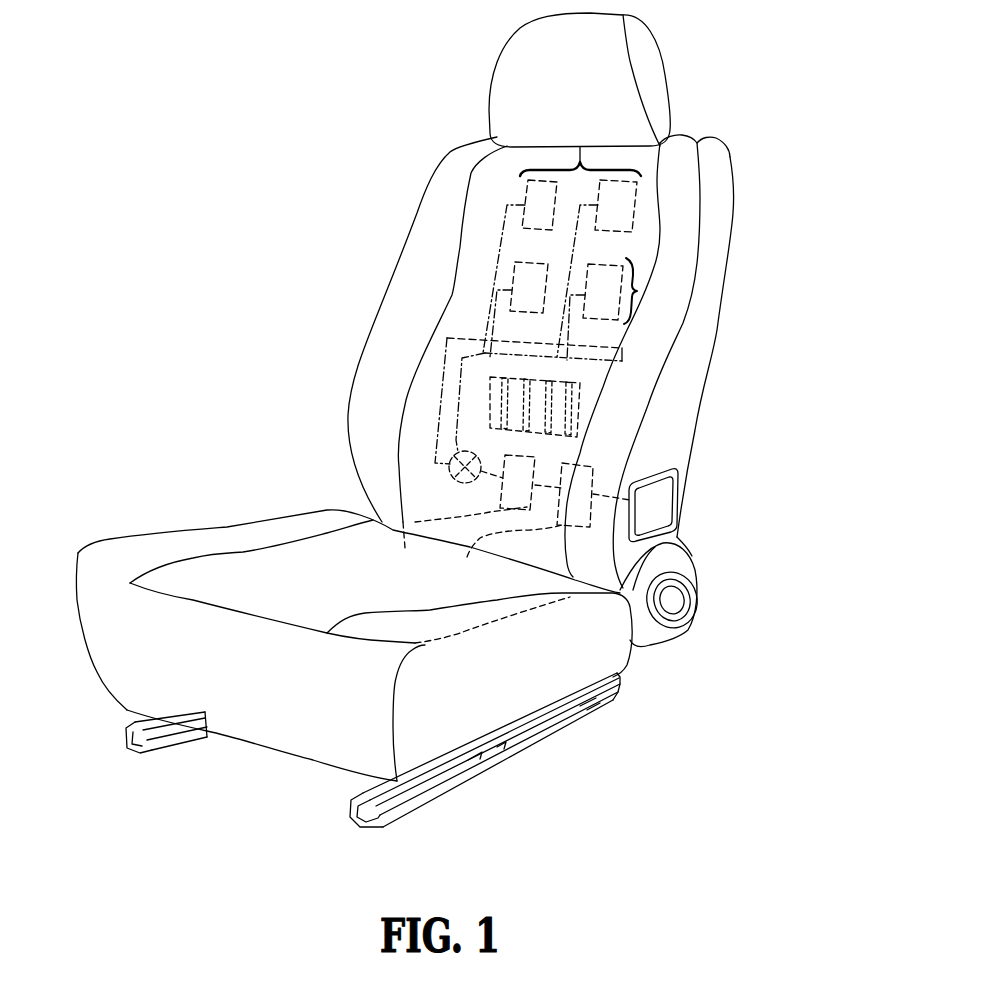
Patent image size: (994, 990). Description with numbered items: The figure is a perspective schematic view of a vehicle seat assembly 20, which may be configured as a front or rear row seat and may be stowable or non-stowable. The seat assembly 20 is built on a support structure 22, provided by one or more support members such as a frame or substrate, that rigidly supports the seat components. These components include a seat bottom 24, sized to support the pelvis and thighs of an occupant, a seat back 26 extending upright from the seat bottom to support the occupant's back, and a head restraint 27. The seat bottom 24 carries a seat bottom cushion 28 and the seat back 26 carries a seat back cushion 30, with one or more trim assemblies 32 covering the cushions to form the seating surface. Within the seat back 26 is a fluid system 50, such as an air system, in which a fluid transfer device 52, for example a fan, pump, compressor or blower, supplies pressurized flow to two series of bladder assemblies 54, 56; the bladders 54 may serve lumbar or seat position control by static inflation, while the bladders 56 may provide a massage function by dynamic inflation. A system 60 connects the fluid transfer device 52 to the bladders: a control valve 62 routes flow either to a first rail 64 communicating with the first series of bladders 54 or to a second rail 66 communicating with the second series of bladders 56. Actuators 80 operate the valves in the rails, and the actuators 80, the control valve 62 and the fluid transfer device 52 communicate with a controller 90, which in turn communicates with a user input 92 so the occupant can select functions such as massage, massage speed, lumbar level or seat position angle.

The seat assembly 20 is at (257, 417).
The support structure 22 is at (613, 700).
The seat bottom 24 is at (157, 507).
The seat back 26 is at (407, 185).
The head restraint 27 is at (657, 77).
The seat bottom cushion 28 is at (447, 622).
The seat back cushion 30 is at (648, 255).
The trim assembly 32 is at (734, 253).
The fluid system 50 is at (440, 267).
The fluid transfer device 52 is at (404, 553).
The first series of bladder assemblies 54 is at (637, 293).
The second series of bladder assemblies 56 is at (580, 147).
The system 60 is at (420, 343).
The control valve 62 is at (451, 474).
The first rail 64 is at (580, 383).
The second rail 66 is at (622, 361).
The actuator 80 is at (578, 411).
The controller 90 is at (488, 551).
The user input 92 is at (680, 503).